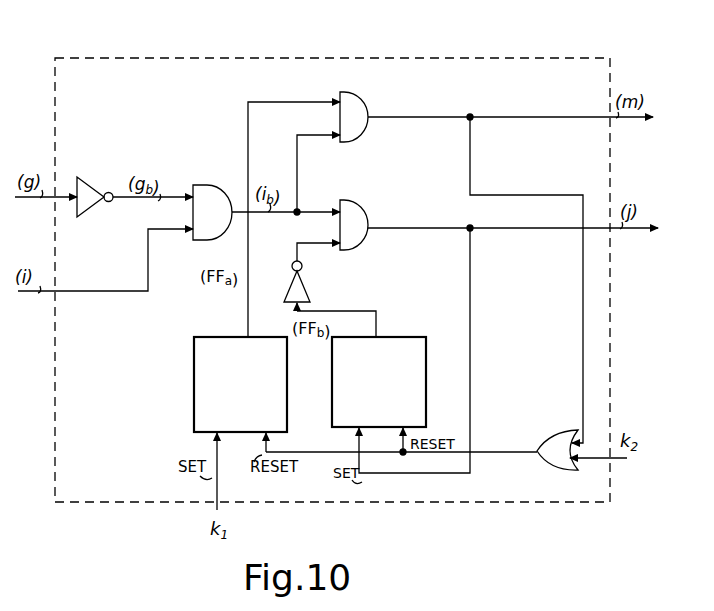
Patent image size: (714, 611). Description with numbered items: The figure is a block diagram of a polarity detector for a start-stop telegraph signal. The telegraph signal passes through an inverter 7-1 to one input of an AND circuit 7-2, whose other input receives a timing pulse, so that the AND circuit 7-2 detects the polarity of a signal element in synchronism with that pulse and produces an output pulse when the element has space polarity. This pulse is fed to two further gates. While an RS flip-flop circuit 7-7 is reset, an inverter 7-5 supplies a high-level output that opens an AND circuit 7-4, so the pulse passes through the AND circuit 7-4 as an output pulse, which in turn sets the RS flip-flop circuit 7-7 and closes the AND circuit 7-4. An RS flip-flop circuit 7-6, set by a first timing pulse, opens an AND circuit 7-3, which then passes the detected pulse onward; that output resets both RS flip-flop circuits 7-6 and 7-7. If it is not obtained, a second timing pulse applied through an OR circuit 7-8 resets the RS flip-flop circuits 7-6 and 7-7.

The inverter 7-1 is at (93, 178).
The AND circuit 7-2 is at (207, 185).
The AND circuit 7-3 is at (364, 116).
The AND circuit 7-4 is at (364, 226).
The inverter 7-5 is at (303, 284).
The RS flip-flop circuit 7-6 is at (194, 345).
The RS flip-flop circuit 7-7 is at (420, 336).
The OR circuit 7-8 is at (556, 431).